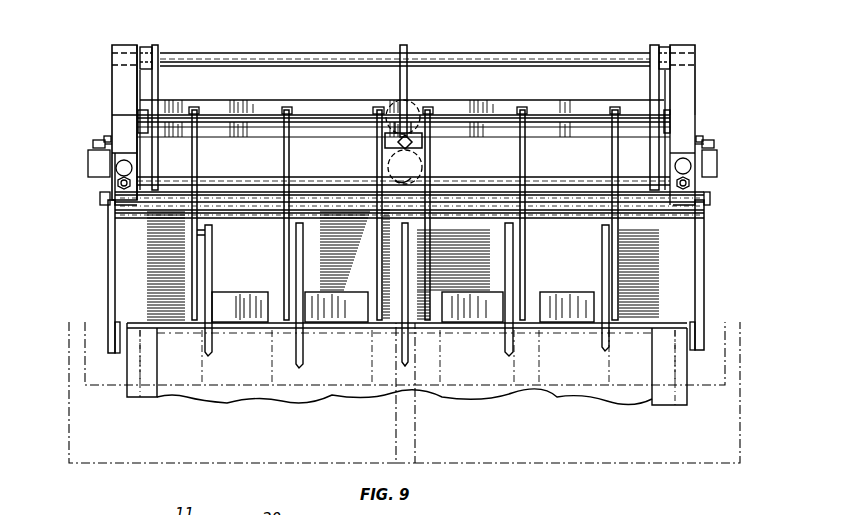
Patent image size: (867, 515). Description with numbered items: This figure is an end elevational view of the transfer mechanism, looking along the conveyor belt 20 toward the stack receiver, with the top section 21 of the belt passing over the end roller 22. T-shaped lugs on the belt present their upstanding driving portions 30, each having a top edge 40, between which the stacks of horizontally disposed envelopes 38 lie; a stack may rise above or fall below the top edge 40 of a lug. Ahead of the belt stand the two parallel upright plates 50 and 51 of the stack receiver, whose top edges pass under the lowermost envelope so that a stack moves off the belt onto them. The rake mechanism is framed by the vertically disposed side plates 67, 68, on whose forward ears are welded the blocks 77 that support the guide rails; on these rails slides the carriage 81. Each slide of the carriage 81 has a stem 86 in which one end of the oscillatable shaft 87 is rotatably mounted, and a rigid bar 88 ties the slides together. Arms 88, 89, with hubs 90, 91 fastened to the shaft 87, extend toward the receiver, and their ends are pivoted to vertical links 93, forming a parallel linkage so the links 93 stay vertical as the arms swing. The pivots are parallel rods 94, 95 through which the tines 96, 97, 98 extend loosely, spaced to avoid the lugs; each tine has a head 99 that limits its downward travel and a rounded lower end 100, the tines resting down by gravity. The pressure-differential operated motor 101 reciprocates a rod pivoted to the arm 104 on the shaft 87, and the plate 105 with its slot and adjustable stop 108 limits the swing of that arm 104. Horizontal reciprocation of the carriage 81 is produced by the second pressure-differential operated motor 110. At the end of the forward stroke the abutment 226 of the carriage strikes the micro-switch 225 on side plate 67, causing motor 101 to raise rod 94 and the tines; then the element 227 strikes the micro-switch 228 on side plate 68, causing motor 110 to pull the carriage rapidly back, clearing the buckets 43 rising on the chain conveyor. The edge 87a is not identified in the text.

The conveyor belt 20 is at (650, 321).
The top section 21 is at (528, 320).
The end roller 22 is at (688, 371).
The driving portion 30 is at (230, 300).
The envelopes 38 is at (146, 262).
The top edge 40 is at (256, 292).
The buckets 43 is at (60, 371).
The plate 50 is at (213, 243).
The plate 51 is at (304, 243).
The side plate 67 is at (108, 243).
The side plate 68 is at (704, 232).
The blocks 77 is at (116, 190).
The carriage 81 is at (104, 91).
The stem 86 is at (112, 52).
The oscillatable shaft 87 is at (318, 34).
The cross bar top edge 87a is at (540, 98).
The arm 88 is at (660, 78).
The arm 89 is at (152, 78).
The hub 90 is at (656, 46).
The hub 91 is at (144, 46).
The vertical link 93 is at (156, 156).
The rod 94 is at (344, 107).
The rod 95 is at (262, 182).
The tine 96 is at (612, 158).
The tine 97 is at (527, 160).
The tine 98 is at (432, 215).
The head 99 is at (283, 107).
The rounded lower end 100 is at (288, 329).
The pressure-differential operated motor 101 is at (416, 108).
The arm 104 is at (410, 50).
The plate 105 is at (425, 145).
The adjustable stop 108 is at (397, 144).
The pressure-differential operated motor 110 is at (423, 167).
The micro-switch 225 is at (94, 162).
The abutment 226 is at (108, 138).
The element 227 is at (726, 142).
The micro-switch 228 is at (717, 170).